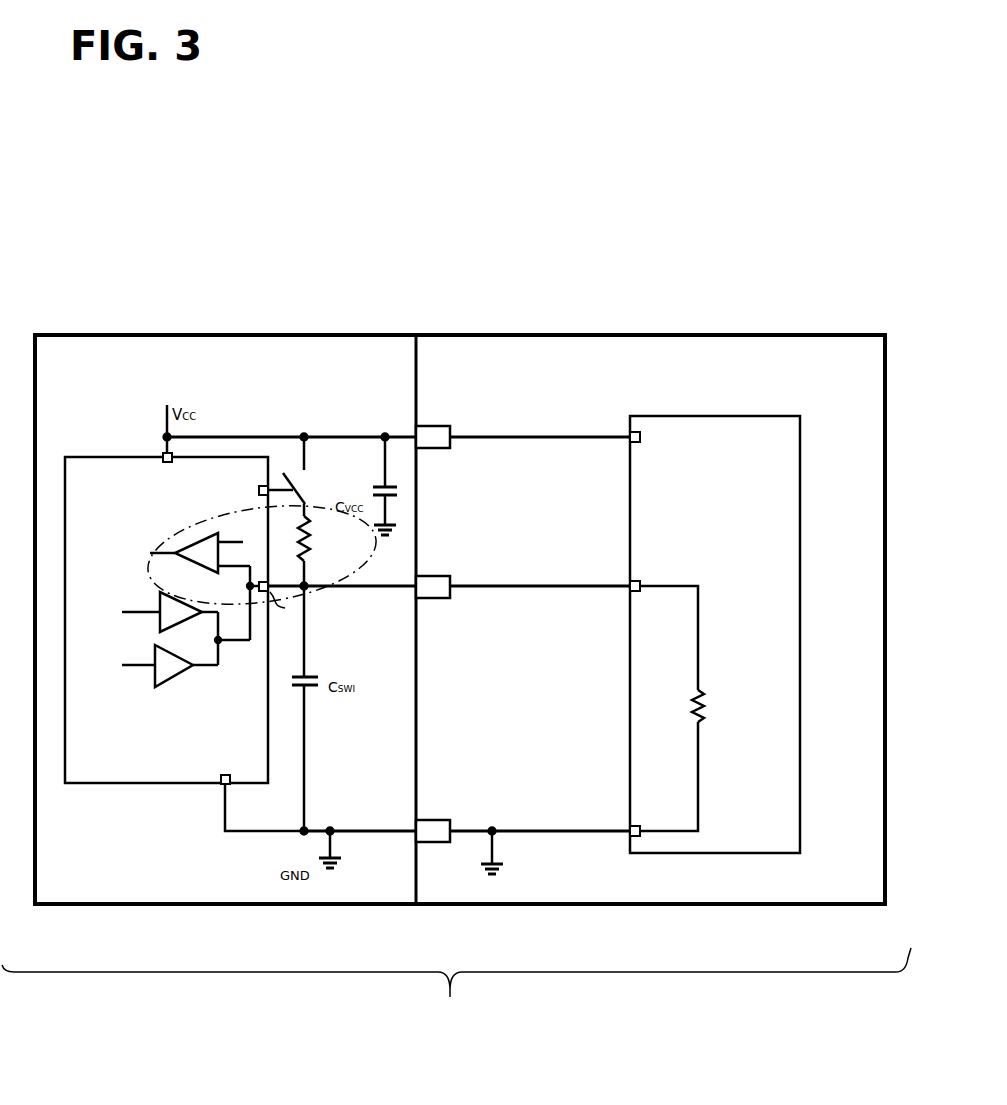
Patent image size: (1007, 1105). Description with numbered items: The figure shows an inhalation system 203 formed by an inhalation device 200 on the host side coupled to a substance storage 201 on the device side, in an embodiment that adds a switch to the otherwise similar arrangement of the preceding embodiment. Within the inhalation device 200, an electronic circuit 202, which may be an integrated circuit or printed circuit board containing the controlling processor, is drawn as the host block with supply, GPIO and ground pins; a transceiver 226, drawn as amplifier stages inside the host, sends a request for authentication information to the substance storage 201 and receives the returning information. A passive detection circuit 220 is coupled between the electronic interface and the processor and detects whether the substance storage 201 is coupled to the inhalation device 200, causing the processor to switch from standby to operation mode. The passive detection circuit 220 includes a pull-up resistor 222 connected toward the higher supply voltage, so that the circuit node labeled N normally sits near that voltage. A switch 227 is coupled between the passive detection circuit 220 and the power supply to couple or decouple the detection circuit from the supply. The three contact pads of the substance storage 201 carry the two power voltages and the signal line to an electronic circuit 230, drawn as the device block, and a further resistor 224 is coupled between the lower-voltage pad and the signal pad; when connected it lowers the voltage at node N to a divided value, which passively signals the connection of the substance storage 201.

The inhalation device 200 is at (193, 310).
The substance storage 201 is at (723, 310).
The electronic circuit 202 is at (97, 784).
The inhalation system 203 is at (456, 997).
The passive detection circuit 220 is at (316, 592).
The pull-up resistor 222 is at (310, 530).
The further resistor 224 is at (697, 695).
The transceiver 226 is at (173, 638).
The switch 227 is at (302, 485).
The electronic circuit 230 is at (800, 500).